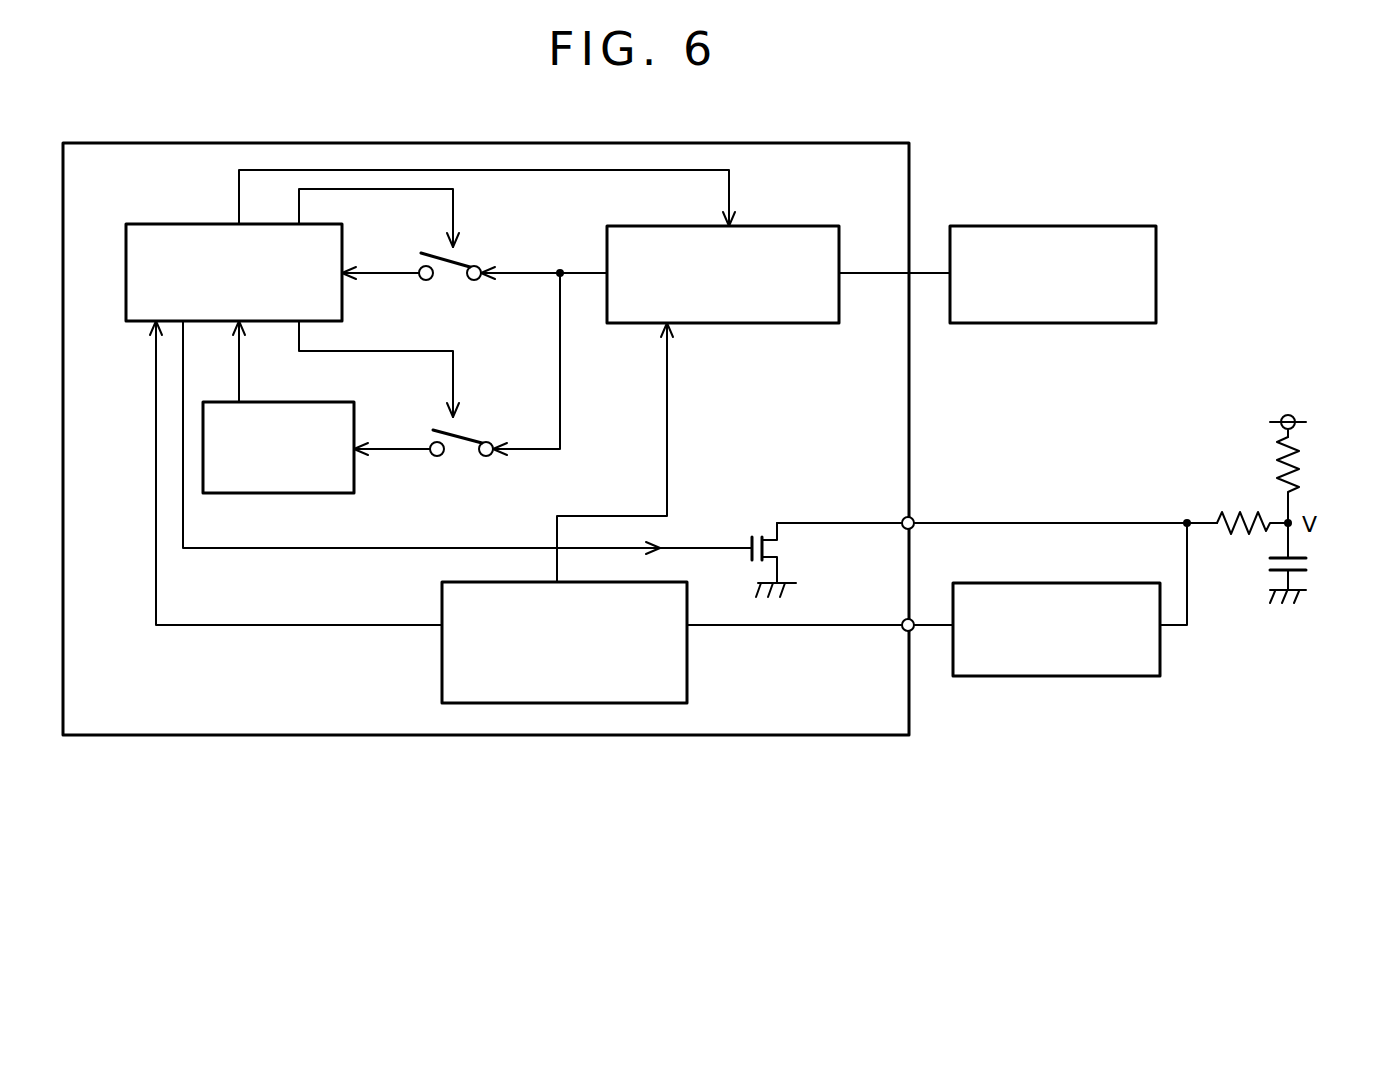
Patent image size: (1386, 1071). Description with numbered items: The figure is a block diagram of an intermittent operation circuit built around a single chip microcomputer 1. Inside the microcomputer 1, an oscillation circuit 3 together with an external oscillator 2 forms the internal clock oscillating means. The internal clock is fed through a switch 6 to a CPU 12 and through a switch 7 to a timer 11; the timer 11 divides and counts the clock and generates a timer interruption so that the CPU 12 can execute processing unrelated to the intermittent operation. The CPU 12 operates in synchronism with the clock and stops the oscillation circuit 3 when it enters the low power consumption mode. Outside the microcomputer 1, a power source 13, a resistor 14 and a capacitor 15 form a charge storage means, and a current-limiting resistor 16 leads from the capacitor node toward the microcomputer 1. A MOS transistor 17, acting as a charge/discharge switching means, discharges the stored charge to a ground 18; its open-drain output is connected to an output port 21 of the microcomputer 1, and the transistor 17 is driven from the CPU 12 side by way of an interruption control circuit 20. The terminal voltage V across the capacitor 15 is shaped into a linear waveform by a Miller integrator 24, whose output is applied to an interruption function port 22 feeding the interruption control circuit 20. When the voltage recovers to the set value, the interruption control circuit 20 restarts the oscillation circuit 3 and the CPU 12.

The single chip microcomputer 1 is at (730, 736).
The oscillator 2 is at (1078, 226).
The oscillation circuit 3 is at (793, 226).
The switch 6 is at (478, 262).
The switch 7 is at (486, 457).
The timer 11 is at (318, 400).
The CPU 12 is at (202, 223).
The power source 13 is at (1295, 415).
The resistor 14 is at (1304, 468).
The capacitor 15 is at (1305, 563).
The current-limiting resistor 16 is at (1230, 536).
The MOS transistor 17 is at (752, 536).
The ground 18 is at (799, 582).
The interruption control circuit 20 is at (442, 606).
The output port 21 is at (913, 518).
The interruption function port 22 is at (912, 618).
The Miller integrator 24 is at (1072, 678).